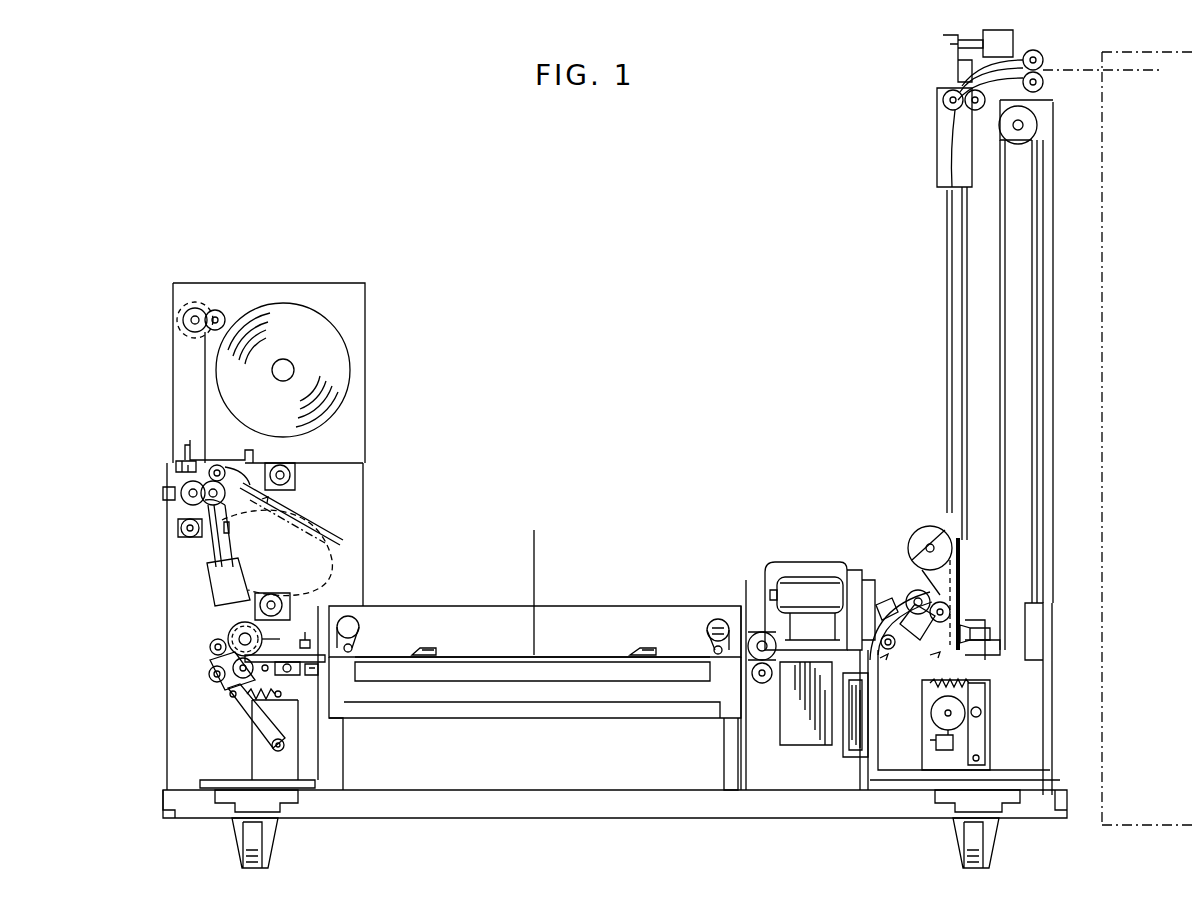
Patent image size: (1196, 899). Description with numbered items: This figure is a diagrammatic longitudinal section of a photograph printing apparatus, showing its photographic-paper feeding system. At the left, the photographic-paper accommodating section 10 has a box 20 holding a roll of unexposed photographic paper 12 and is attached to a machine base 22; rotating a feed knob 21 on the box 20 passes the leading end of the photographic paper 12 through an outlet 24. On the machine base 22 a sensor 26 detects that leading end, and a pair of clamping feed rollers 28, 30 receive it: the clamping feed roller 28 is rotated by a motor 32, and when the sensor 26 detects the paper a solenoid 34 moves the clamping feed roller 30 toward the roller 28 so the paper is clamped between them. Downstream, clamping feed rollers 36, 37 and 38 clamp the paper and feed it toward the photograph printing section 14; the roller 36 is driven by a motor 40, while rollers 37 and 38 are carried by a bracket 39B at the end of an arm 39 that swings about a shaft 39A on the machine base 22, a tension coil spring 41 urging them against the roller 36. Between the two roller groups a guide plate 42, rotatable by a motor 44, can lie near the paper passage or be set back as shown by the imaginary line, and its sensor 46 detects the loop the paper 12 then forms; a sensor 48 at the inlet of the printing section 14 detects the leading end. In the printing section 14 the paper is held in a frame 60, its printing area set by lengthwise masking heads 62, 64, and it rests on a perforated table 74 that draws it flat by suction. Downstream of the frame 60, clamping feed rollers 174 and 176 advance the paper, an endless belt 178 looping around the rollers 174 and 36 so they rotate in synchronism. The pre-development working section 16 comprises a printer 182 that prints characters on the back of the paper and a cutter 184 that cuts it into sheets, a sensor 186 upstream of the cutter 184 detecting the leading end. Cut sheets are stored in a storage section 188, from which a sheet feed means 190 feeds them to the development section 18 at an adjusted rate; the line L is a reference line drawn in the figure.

The photographic-paper accommodating section 10 is at (372, 305).
The photographic paper 12 is at (310, 312).
The photograph printing section 14 is at (655, 590).
The pre-development working section 16 is at (841, 530).
The development section 18 is at (1186, 50).
The box 20 is at (260, 283).
The feed knob 21 is at (178, 318).
The machine base 22 is at (366, 530).
The outlet 24 is at (215, 465).
The sensor 26 is at (176, 468).
The clamping feed roller 28 is at (291, 514).
The clamping feed roller 30 is at (181, 500).
The motor 32 is at (178, 530).
The solenoid 34 is at (160, 493).
The clamping feed roller 36 is at (261, 639).
The clamping feed roller 37 is at (212, 640).
The clamping feed roller 38 is at (230, 676).
The arm 39 is at (235, 704).
The shaft 39A is at (275, 758).
The bracket 39B is at (209, 661).
The motor 40 is at (282, 608).
The tension coil spring 41 is at (276, 698).
The guide plate 42 is at (222, 552).
The motor 44 is at (295, 478).
The sensor 46 is at (229, 530).
The sensor 48 is at (301, 630).
The frame 60 is at (760, 630).
The lengthwise masking head 62 is at (428, 648).
The lengthwise masking head 64 is at (636, 648).
The table 74 is at (478, 657).
The reference line L is at (536, 553).
The clamping feed roller 174 is at (762, 628).
The clamping feed roller 176 is at (770, 685).
The endless belt 178 is at (710, 620).
The printer 182 is at (800, 735).
The cutter 184 is at (862, 582).
The sensor 186 is at (838, 710).
The storage section 188 is at (962, 590).
The sheet feed means 190 is at (1016, 695).